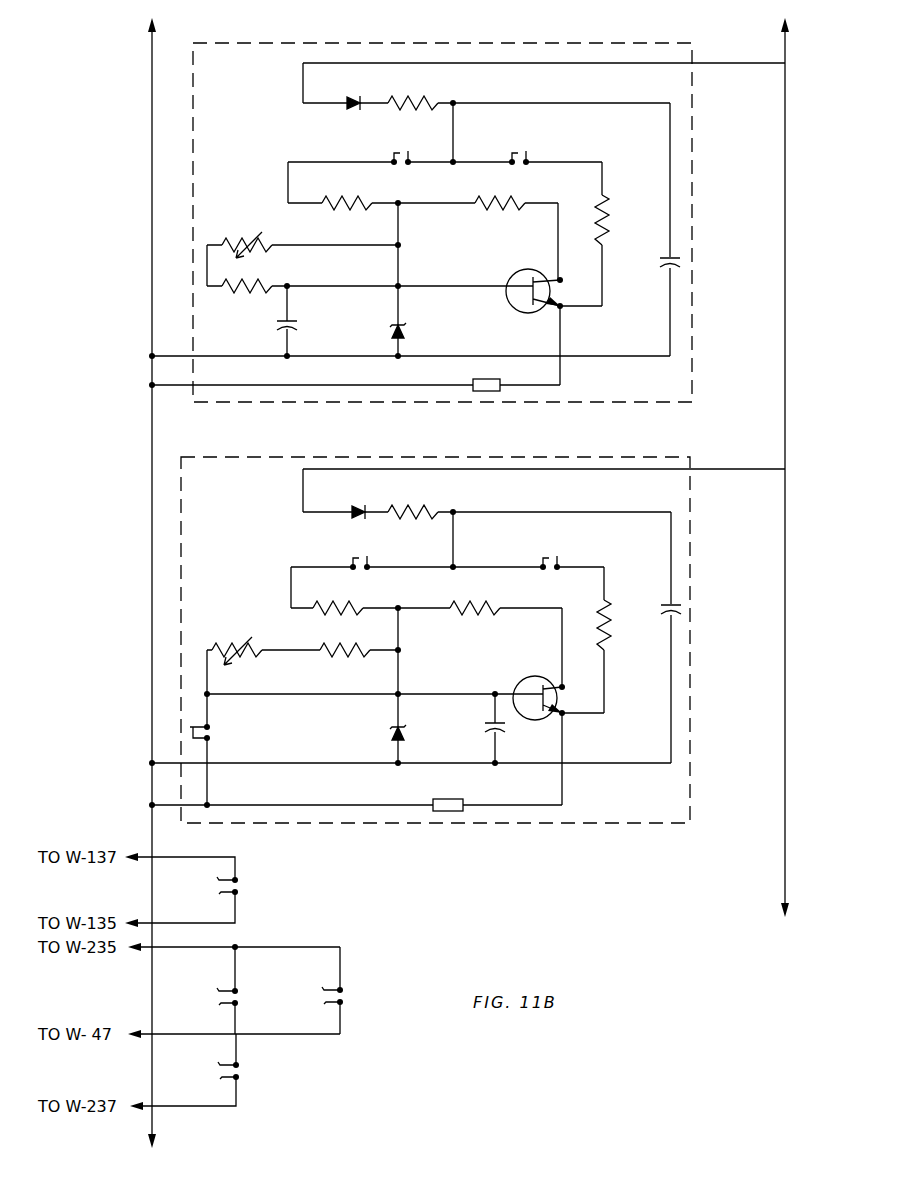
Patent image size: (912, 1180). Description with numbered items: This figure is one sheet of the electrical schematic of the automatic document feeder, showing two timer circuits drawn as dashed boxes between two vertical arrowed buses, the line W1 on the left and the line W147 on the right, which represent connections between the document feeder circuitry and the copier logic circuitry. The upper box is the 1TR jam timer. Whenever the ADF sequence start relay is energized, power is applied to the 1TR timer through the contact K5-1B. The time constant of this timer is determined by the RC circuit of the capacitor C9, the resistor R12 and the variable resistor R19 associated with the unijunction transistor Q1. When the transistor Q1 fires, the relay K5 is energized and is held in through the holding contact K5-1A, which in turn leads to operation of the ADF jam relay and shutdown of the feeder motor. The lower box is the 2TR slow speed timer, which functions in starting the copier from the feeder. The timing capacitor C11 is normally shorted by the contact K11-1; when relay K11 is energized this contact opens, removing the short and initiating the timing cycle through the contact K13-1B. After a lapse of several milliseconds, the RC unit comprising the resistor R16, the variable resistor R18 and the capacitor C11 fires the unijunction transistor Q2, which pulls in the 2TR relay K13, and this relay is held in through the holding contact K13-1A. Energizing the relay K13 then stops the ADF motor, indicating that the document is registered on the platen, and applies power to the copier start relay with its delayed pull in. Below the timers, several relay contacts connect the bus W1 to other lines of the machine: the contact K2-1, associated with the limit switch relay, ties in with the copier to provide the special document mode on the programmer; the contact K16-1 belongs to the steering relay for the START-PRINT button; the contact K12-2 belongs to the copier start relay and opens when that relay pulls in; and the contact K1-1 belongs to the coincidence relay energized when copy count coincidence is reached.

The wire/bus W1 is at (152, 692).
The wire/bus W147 is at (785, 672).
The jam timer 1TR is at (442, 237).
The slow speed timer 2TR is at (435, 655).
The contact K5-1B is at (407, 144).
The holding contact K5-1A is at (524, 144).
The resistor R19 is at (248, 254).
The resistor R12 is at (247, 299).
The capacitor C9 is at (300, 321).
The unijunction transistor Q1 is at (534, 282).
The relay K5 is at (486, 375).
The contact K13-1B is at (362, 550).
The holding contact K13-1A is at (559, 550).
The resistor R18 is at (237, 643).
The resistor R16 is at (345, 663).
The unijunction transistor Q2 is at (538, 689).
The timing capacitor C11 is at (481, 728).
The contact K11-1 is at (226, 734).
The 2TR relay K13 is at (449, 796).
The contact K2-1 is at (248, 887).
The contact K16-1 is at (254, 998).
The contact K12-2 is at (358, 997).
The contact K1-1 is at (250, 1072).